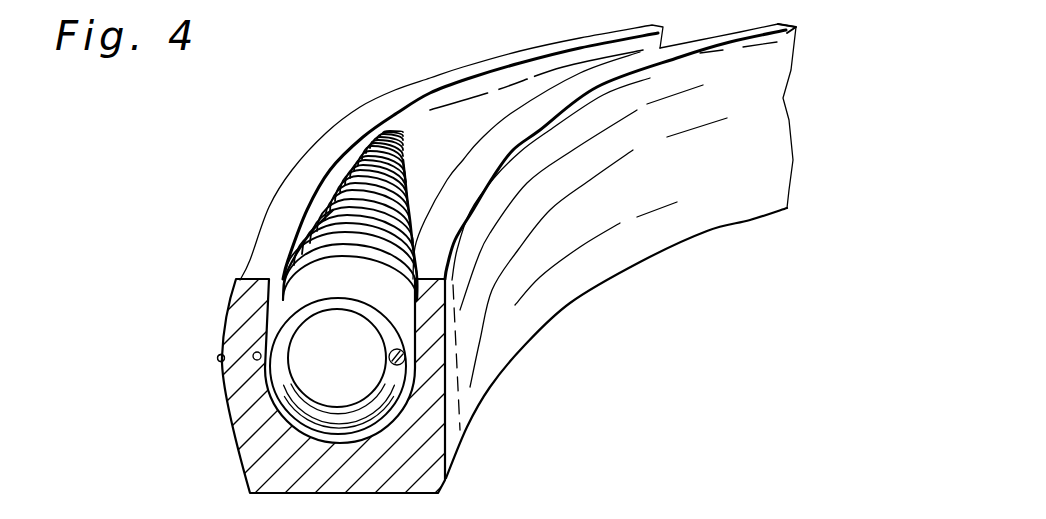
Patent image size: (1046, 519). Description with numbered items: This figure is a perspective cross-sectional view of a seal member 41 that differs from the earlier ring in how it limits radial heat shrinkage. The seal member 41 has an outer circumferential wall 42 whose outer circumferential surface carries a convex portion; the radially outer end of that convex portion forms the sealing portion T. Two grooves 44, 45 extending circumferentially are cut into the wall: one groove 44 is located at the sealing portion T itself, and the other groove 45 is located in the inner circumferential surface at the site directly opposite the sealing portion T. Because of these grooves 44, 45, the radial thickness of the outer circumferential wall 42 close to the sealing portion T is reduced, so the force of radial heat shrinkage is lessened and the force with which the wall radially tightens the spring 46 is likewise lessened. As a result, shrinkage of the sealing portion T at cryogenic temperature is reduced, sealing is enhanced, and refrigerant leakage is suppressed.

The seal member 41 is at (229, 466).
The outer circumferential wall 42 is at (252, 422).
The groove 44 is at (216, 359).
The groove 45 is at (261, 356).
The spring 46 is at (405, 353).
The sealing portion T is at (215, 361).